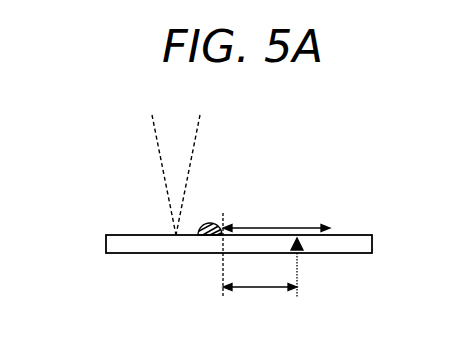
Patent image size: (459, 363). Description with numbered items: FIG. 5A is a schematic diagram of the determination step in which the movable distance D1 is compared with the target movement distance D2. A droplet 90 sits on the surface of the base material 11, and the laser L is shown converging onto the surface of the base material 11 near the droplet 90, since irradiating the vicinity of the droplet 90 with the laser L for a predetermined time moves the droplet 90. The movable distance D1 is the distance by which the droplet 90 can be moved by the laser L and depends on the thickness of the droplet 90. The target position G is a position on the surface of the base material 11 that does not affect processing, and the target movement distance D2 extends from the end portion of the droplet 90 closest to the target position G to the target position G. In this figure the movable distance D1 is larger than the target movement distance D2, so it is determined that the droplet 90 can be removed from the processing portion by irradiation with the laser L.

The base material 11 is at (110, 245).
The laser L is at (157, 145).
The droplet 90 is at (211, 224).
The target position G is at (305, 244).
The movable distance D1 is at (276, 219).
The target movement distance D2 is at (260, 298).